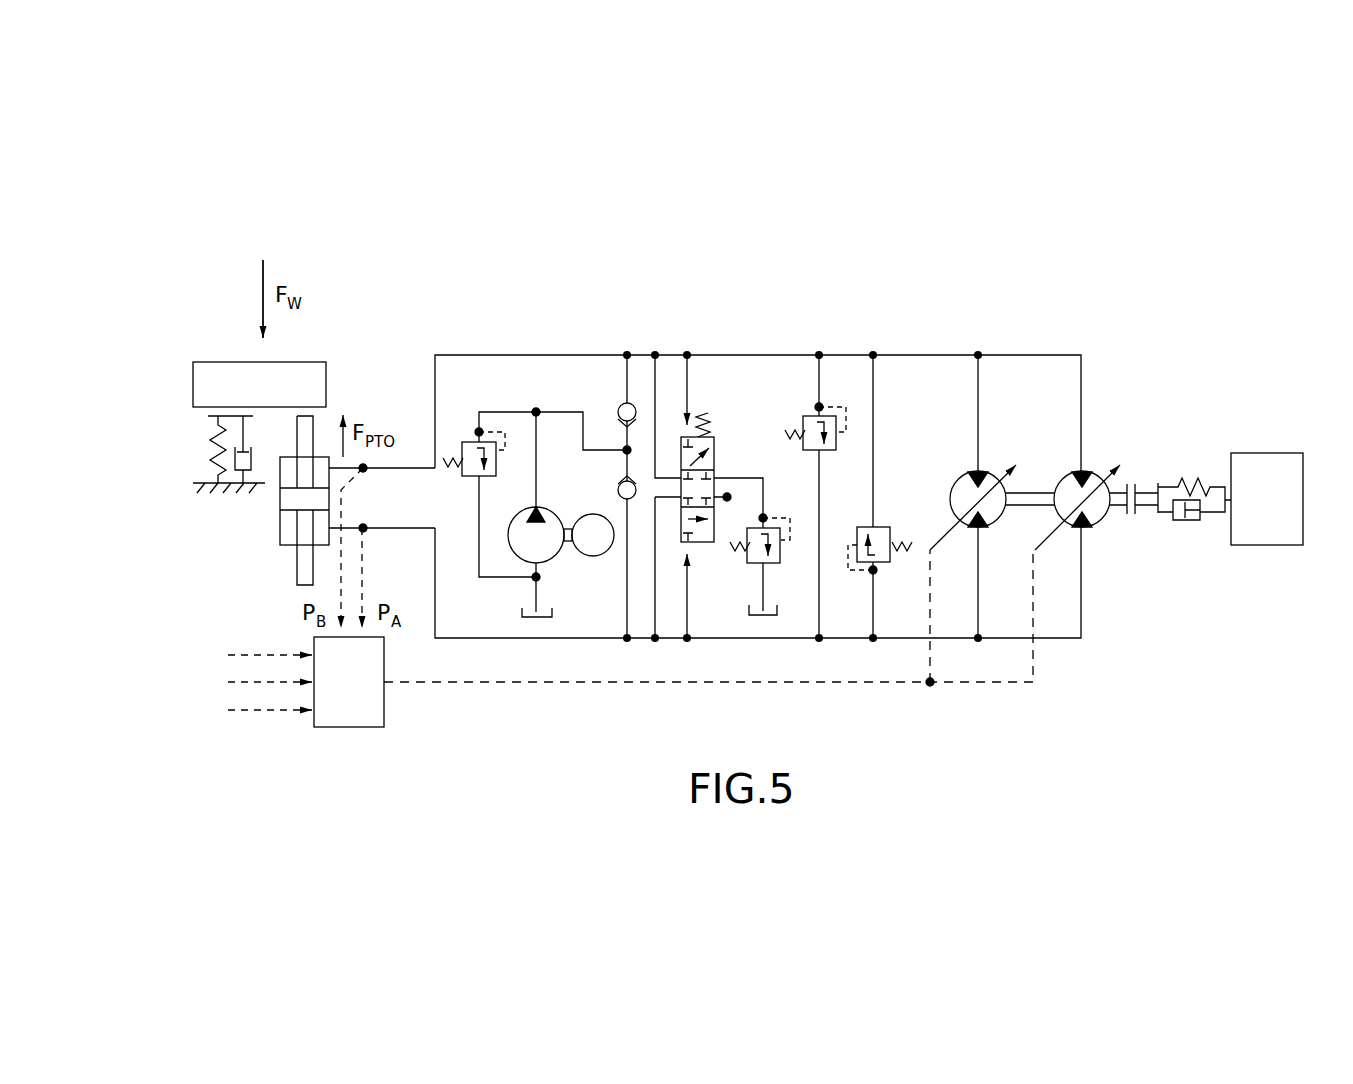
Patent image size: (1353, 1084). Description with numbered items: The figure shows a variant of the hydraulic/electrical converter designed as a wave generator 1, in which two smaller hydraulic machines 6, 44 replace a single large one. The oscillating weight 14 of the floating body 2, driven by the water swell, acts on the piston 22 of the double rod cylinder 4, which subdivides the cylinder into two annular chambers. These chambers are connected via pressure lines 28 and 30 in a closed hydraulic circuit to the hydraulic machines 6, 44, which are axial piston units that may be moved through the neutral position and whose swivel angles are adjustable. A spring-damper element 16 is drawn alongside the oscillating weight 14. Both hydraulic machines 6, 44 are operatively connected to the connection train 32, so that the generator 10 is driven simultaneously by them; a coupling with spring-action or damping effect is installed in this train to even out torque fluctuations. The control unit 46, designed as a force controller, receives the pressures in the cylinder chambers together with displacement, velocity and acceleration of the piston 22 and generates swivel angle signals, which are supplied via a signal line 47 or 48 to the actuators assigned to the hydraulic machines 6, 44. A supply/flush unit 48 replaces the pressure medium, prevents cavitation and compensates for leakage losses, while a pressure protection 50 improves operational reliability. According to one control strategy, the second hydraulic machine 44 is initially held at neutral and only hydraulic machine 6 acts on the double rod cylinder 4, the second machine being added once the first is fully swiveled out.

The wave generator 1 is at (430, 290).
The floating body 2 is at (188, 380).
The double rod cylinder 4 is at (250, 539).
The hydraulic machine 6 is at (1093, 510).
The generator 10 is at (1282, 511).
The oscillating weight 14 is at (274, 398).
The spring damper 16 is at (212, 450).
The piston 22 is at (318, 498).
The pressure line 28 is at (452, 640).
The pressure line 30 is at (483, 355).
The connection train 32 is at (1025, 490).
The second hydraulic machine 44 is at (963, 490).
The control unit 46 is at (364, 694).
The signal line 47 is at (669, 684).
The supply/flush unit 48 is at (602, 388).
The pressure protection 50 is at (845, 385).